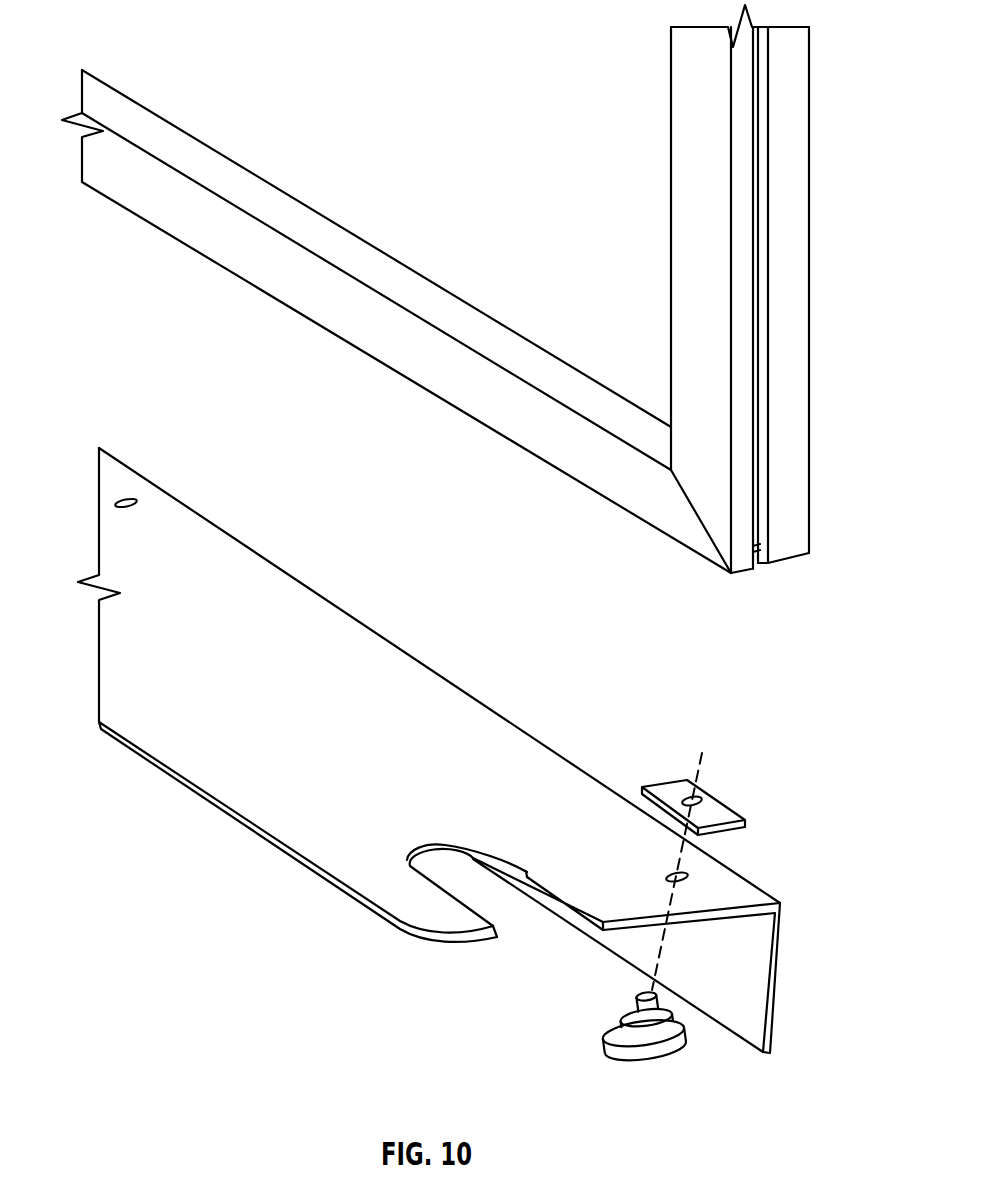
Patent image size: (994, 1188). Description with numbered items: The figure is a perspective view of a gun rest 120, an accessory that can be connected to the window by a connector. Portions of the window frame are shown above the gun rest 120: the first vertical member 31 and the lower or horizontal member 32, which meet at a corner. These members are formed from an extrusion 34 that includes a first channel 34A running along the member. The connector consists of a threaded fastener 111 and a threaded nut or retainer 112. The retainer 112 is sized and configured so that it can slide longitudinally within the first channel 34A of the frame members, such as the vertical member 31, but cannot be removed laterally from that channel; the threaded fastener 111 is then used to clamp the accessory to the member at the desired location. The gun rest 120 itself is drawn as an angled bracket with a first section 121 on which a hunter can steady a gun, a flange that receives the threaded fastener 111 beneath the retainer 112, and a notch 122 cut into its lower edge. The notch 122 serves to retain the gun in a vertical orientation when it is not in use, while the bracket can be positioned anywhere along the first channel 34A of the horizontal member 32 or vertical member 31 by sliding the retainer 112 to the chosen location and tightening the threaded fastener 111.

The first vertical member 31 is at (815, 208).
The horizontal member 32 is at (330, 312).
The extrusion 34 is at (735, 580).
The first channel 34A is at (757, 525).
The threaded fastener 111 is at (657, 1053).
The threaded nut or retainer 112 is at (718, 818).
The gun rest 120 is at (233, 825).
The bracket plate portion 121 is at (188, 750).
The notch 122 is at (487, 902).